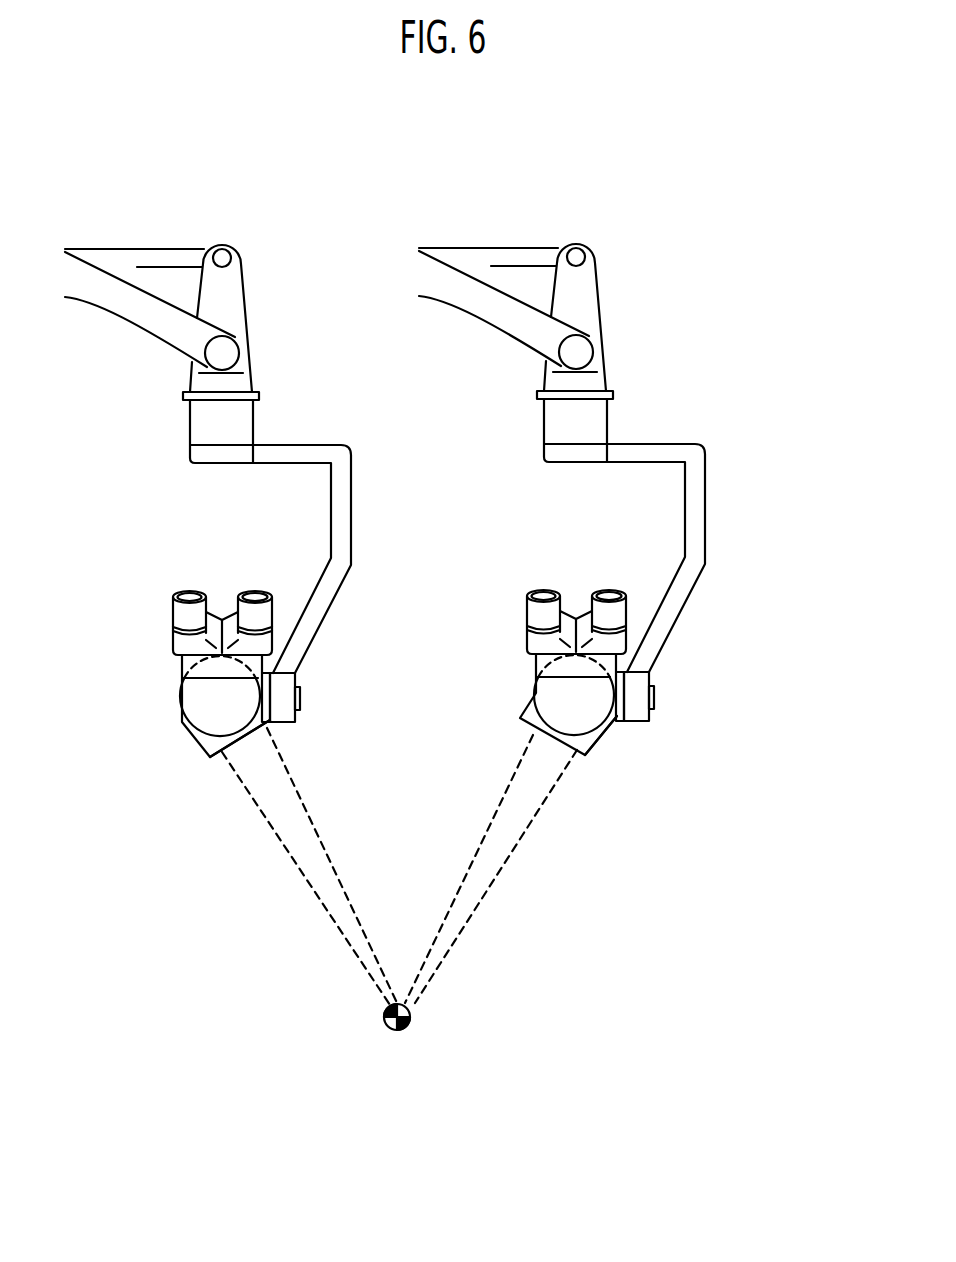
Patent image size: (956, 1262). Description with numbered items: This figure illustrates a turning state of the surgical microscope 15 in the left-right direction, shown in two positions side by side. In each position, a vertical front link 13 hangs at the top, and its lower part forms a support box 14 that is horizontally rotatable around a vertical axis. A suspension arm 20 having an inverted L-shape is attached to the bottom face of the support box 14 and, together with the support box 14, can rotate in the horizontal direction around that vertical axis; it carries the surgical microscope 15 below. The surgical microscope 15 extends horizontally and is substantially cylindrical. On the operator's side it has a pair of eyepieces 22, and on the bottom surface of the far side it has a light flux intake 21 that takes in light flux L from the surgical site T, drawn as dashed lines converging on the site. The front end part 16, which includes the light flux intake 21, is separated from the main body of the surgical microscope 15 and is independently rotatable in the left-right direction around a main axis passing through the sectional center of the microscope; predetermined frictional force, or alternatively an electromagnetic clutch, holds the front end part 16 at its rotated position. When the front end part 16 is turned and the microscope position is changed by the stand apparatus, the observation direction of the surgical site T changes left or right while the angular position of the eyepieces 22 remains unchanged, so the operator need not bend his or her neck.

The front link 13 is at (248, 303).
The support box 14 is at (188, 423).
The surgical microscope 15 is at (180, 674).
The front end part 16 is at (198, 733).
The suspension arm 20 is at (352, 507).
The light flux intake 21 is at (243, 742).
The eyepieces 22 is at (255, 587).
The light flux L is at (332, 870).
The surgical site T is at (397, 1033).